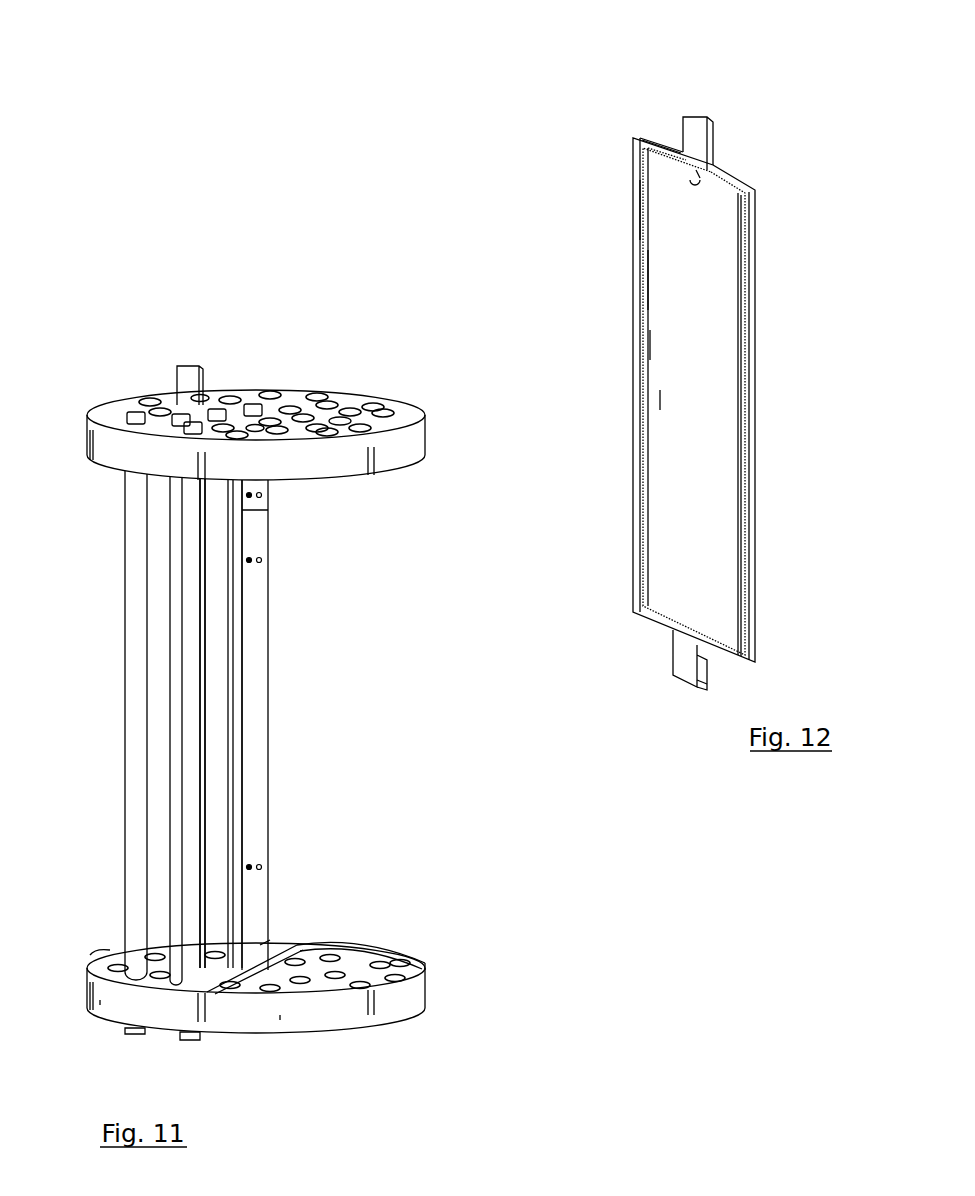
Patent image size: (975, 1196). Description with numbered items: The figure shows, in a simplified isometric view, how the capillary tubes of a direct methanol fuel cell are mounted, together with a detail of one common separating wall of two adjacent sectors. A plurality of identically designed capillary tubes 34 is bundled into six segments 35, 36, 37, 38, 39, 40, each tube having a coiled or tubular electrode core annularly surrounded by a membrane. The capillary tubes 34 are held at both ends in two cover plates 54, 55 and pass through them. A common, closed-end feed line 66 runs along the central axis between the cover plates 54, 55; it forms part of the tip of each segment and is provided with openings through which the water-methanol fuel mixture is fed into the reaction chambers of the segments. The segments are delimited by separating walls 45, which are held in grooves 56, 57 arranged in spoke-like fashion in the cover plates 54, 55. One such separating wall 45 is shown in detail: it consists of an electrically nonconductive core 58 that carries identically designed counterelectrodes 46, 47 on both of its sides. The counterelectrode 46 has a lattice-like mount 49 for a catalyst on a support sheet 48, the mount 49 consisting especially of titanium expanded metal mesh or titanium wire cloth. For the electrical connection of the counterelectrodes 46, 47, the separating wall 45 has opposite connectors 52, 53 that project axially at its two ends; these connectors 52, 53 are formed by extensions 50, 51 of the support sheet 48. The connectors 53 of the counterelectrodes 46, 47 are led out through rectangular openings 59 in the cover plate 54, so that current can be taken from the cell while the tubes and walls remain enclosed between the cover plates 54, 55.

In FIG. 11, the capillary tubes 34 is at (101, 728).
In FIG. 11, the segment 35 is at (140, 1000).
In FIG. 11, the segment 36 is at (287, 1016).
In FIG. 11, the segment 37 is at (417, 992).
In FIG. 11, the segment 38 is at (375, 945).
In FIG. 11, the segment 39 is at (282, 938).
In FIG. 11, the segment 40 is at (95, 951).
In FIG. 11, the separating wall 45 is at (153, 590).
In FIG. 12, the separating wall 45 is at (763, 182).
In FIG. 12, the counterelectrode 46 is at (652, 341).
In FIG. 12, the counterelectrode 47 is at (664, 140).
In FIG. 12, the support sheet 48 is at (645, 282).
In FIG. 12, the lattice-like mount 49 is at (658, 397).
In FIG. 12, the extension of the support sheet 50 is at (681, 664).
In FIG. 12, the extension of the support sheet 51 is at (716, 166).
In FIG. 12, the connector 52 is at (692, 672).
In FIG. 11, the connector 53 is at (170, 363).
In FIG. 12, the connector 53 is at (688, 112).
In FIG. 11, the cover plate 54 is at (96, 406).
In FIG. 11, the cover plate 55 is at (432, 972).
In FIG. 11, the groove 56 is at (369, 476).
In FIG. 11, the groove 57 is at (369, 1003).
In FIG. 12, the electrically nonconductive core 58 is at (641, 210).
In FIG. 11, the rectangular openings 59 is at (345, 410).
In FIG. 11, the feed line 66 is at (268, 675).